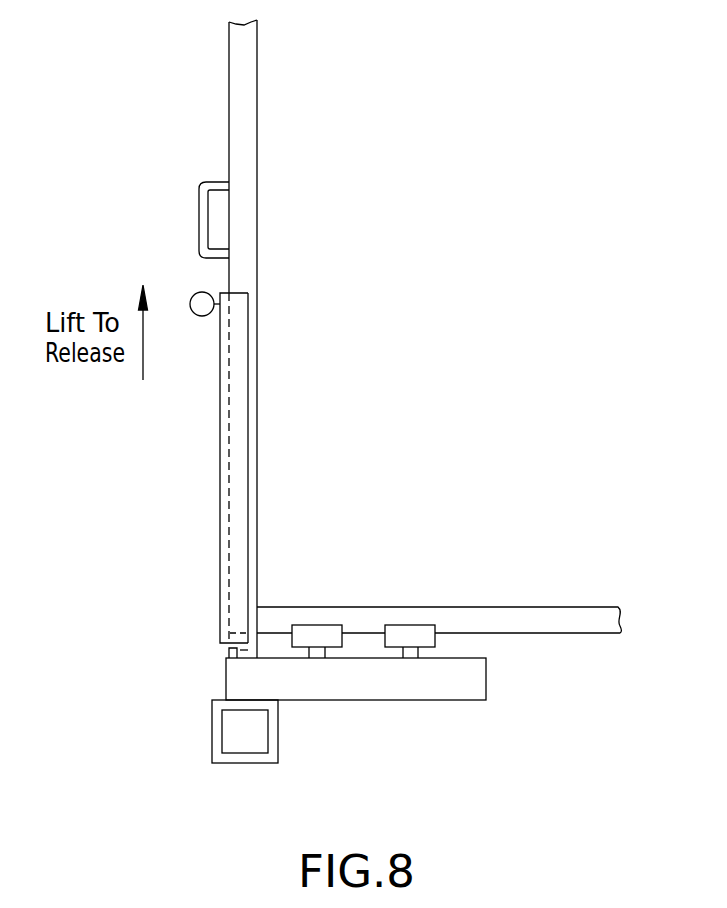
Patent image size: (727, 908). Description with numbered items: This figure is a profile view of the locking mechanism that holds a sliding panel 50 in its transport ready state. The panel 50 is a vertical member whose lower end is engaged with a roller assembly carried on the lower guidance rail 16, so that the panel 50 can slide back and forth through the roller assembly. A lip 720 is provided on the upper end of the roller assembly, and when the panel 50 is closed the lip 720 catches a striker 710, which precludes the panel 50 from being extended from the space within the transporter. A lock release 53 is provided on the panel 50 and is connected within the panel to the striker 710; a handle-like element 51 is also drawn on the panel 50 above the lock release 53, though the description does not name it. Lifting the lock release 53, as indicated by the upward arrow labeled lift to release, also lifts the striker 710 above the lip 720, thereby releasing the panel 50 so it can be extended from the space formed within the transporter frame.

The panel 50 is at (243, 73).
The handle 51 is at (199, 182).
The lock release 53 is at (194, 296).
The lip 720 is at (226, 653).
The striker 710 is at (246, 650).
The lower guidance rail 16 is at (227, 757).